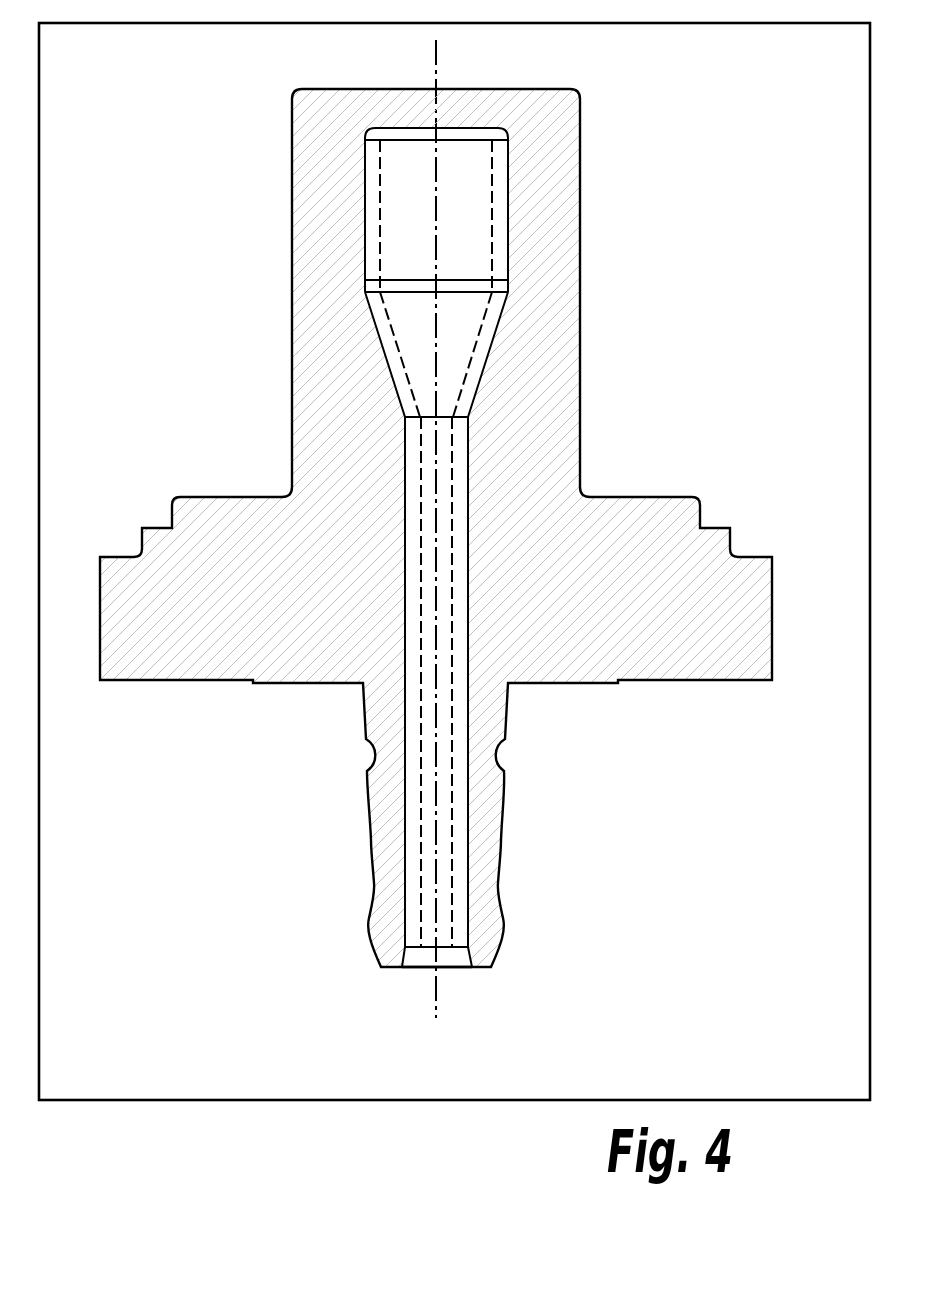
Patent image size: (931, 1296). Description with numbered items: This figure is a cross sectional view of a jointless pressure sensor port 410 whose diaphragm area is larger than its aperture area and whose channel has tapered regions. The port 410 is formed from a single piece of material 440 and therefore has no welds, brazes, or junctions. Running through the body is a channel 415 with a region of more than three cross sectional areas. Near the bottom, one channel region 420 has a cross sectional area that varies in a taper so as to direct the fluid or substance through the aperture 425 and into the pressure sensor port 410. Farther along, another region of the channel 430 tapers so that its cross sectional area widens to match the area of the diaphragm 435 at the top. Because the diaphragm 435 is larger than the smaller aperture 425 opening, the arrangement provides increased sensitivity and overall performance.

The jointless pressure sensor port 410 is at (673, 1045).
The channel 415 is at (435, 810).
The channel region 420 is at (403, 958).
The aperture 425 is at (436, 968).
The channel region 430 is at (433, 340).
The diaphragm 435 is at (436, 128).
The single piece of material 440 is at (582, 648).